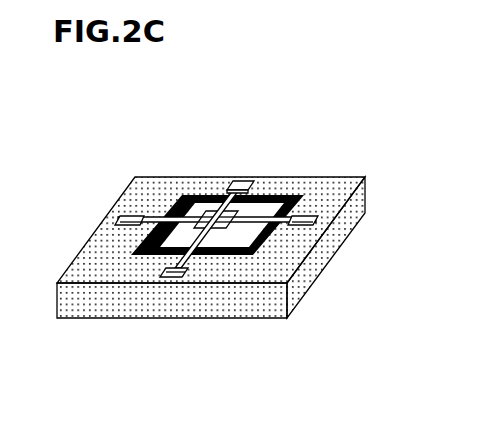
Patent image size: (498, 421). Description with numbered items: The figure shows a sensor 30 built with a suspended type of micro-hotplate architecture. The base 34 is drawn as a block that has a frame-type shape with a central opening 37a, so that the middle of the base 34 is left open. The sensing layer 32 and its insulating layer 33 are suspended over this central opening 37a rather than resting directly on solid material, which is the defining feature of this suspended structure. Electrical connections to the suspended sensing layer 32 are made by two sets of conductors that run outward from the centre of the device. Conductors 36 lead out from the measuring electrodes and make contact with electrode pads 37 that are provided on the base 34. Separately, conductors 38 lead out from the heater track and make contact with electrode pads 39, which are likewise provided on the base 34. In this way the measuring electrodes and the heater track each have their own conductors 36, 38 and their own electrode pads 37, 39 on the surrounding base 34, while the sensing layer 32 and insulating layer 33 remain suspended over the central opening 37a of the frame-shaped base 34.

The sensor 30 is at (87, 174).
The sensing layer 32 is at (210, 213).
The insulating layer 33 is at (243, 237).
The base 34 is at (338, 193).
The conductors 36 is at (276, 241).
The electrode pads 37 is at (311, 224).
The central opening 37a is at (138, 253).
The conductors 38 is at (232, 194).
The electrode pads 39 is at (241, 181).